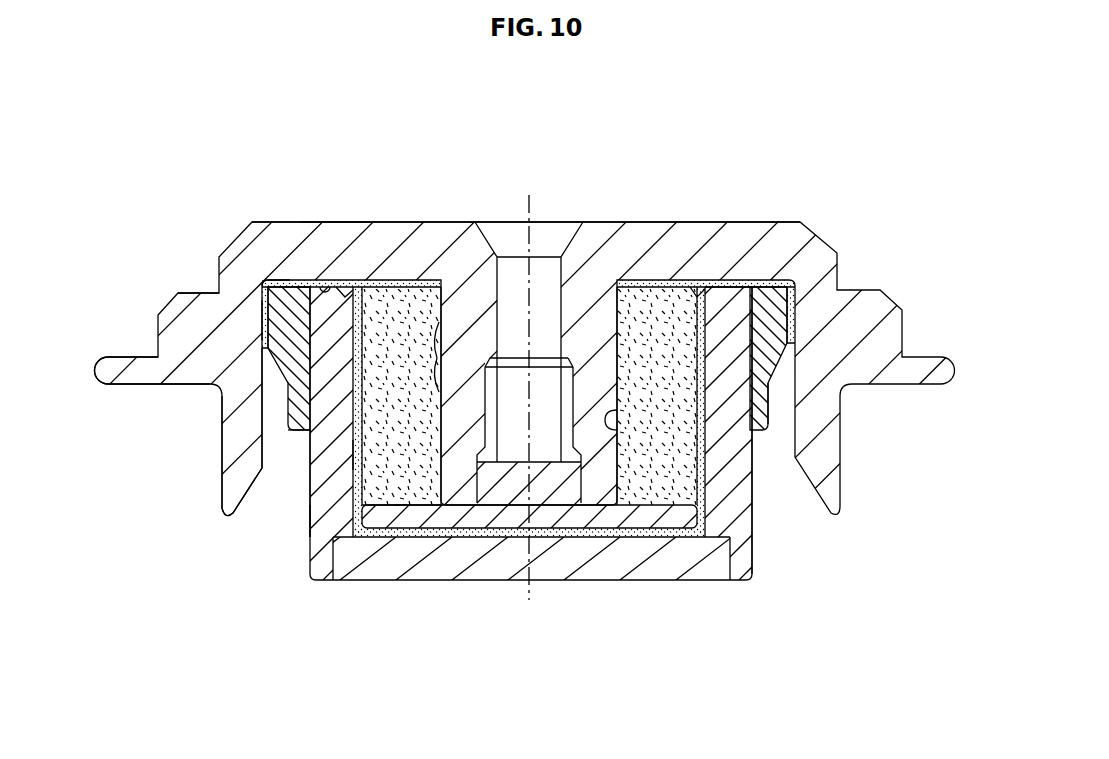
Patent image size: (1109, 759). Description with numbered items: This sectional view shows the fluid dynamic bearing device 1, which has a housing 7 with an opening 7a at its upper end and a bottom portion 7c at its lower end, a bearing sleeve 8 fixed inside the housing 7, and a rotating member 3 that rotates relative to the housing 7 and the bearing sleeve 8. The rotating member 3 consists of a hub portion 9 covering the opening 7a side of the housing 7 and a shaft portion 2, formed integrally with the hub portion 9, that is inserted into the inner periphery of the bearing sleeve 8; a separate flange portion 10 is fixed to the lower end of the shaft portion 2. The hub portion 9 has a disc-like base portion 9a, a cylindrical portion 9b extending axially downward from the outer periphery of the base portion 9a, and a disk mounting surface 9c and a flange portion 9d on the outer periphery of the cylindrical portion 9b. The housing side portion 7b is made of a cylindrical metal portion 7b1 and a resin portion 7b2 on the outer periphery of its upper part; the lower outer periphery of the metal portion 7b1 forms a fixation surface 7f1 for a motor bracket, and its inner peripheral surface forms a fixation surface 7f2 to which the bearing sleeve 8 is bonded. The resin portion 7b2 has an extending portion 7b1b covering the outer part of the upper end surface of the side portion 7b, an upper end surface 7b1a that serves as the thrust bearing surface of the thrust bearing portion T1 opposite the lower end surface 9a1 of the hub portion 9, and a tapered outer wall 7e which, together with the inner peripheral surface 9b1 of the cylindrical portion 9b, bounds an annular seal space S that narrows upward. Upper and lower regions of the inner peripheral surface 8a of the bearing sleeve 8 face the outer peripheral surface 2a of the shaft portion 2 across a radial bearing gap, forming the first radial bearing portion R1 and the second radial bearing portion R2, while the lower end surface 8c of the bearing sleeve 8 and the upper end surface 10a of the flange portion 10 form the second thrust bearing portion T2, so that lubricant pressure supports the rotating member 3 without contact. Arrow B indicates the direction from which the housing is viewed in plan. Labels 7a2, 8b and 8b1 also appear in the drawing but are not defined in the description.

The fluid dynamic bearing device 1 is at (632, 150).
The shaft portion 2 is at (604, 366).
The outer peripheral surface of the shaft portion 2a is at (648, 510).
The rotating member 3 is at (332, 217).
The housing 7 is at (692, 584).
The opening 7a is at (268, 280).
The flange portion of case 7a2 is at (790, 286).
The side portion 7b is at (755, 506).
The metal portion 7b1 is at (310, 492).
The upper end surface of the resin portion 7b1a is at (270, 280).
The extending portion 7b1b is at (741, 283).
The resin portion 7b2 is at (262, 312).
The bottom portion 7c is at (493, 572).
The tapered outer wall 7e is at (290, 415).
The fixation surface 7f1 is at (310, 513).
The fixation surface 7f2 is at (378, 330).
The bearing sleeve 8 is at (686, 458).
The inner peripheral surface of the bearing sleeve 8a is at (620, 430).
The side portion of molded resin 8b is at (262, 483).
The side skin of molded resin 8b1 is at (355, 487).
The lower end surface of the bearing sleeve 8c is at (382, 510).
The hub portion 9 is at (689, 218).
The base portion 9a is at (657, 245).
The lower end surface of the hub portion 9a1 is at (344, 287).
The cylindrical portion 9b is at (222, 452).
The inner peripheral surface of the cylindrical portion 9b1 is at (262, 372).
The disk mounting surface 9c is at (193, 292).
The flange portion 9d is at (114, 380).
The flange portion 10 is at (623, 514).
The upper end surface of the flange portion 10a is at (414, 509).
The arrow B is at (466, 188).
The seal space S is at (258, 330).
The thrust bearing portion T1 is at (302, 282).
The second thrust bearing portion T2 is at (400, 510).
The first radial bearing portion R1 is at (420, 357).
The second radial bearing portion R2 is at (420, 453).